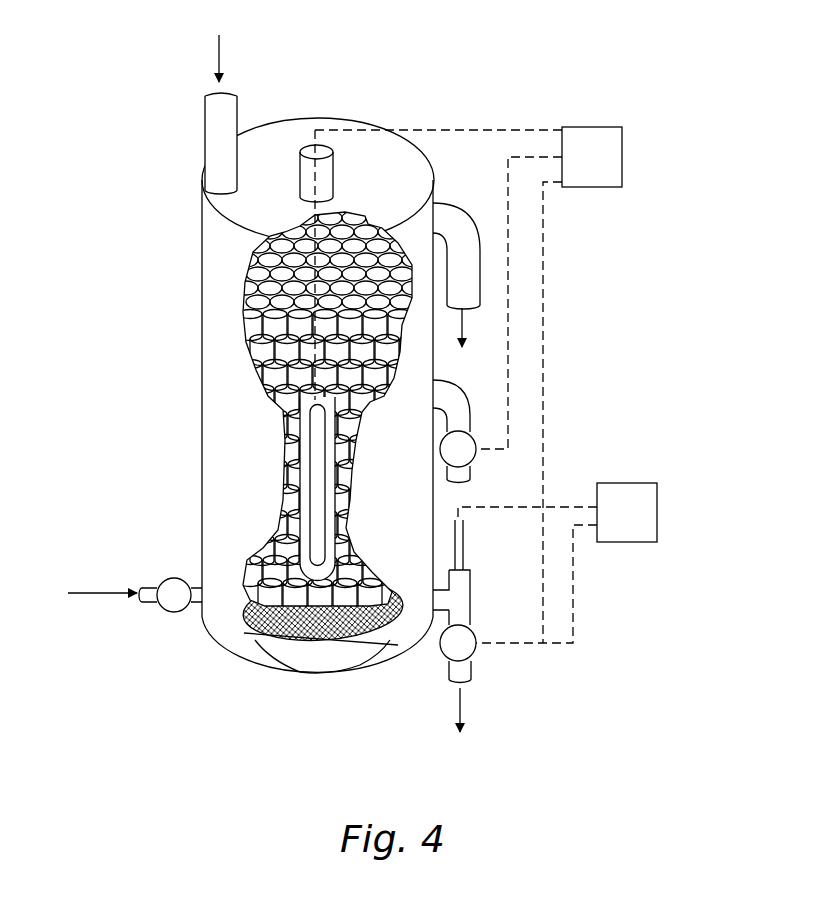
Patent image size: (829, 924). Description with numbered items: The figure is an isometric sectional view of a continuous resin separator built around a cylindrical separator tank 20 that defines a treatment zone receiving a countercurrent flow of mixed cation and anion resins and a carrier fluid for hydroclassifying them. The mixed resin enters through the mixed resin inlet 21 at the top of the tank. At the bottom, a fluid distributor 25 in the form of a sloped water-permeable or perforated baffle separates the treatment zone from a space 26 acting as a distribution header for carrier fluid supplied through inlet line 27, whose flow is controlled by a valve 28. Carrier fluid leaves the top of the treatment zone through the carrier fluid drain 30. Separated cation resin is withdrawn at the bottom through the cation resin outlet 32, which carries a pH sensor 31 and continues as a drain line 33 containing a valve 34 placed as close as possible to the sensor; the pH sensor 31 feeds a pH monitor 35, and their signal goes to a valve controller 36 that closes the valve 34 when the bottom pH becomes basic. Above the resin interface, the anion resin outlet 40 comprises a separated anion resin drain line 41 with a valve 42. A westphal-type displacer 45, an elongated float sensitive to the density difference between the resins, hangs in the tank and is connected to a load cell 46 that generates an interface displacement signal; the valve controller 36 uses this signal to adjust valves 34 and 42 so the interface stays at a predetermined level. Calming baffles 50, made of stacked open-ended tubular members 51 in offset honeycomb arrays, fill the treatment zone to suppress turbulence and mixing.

The cylindrical separator tank 20 is at (202, 258).
The mixed resin inlet 21 is at (205, 113).
The fluid distributor 25 is at (360, 645).
The space 26 is at (297, 657).
The inlet line 27 is at (148, 602).
The valve 28 is at (170, 578).
The carrier fluid drain 30 is at (460, 206).
The pH sensor 31 is at (463, 545).
The cation resin outlet 32 is at (470, 602).
The drain line 33 is at (470, 679).
The valve 34 is at (476, 636).
The pH monitor 35 is at (657, 505).
The valve controller 36 is at (622, 165).
The anion resin outlet 40 is at (460, 392).
The separated anion resin drain line 41 is at (466, 479).
The valve 42 is at (476, 455).
The westphal-type displacer 45 is at (325, 512).
The load cell 46 is at (335, 178).
The calming baffles 50 is at (288, 410).
The tubular members 51 is at (262, 338).